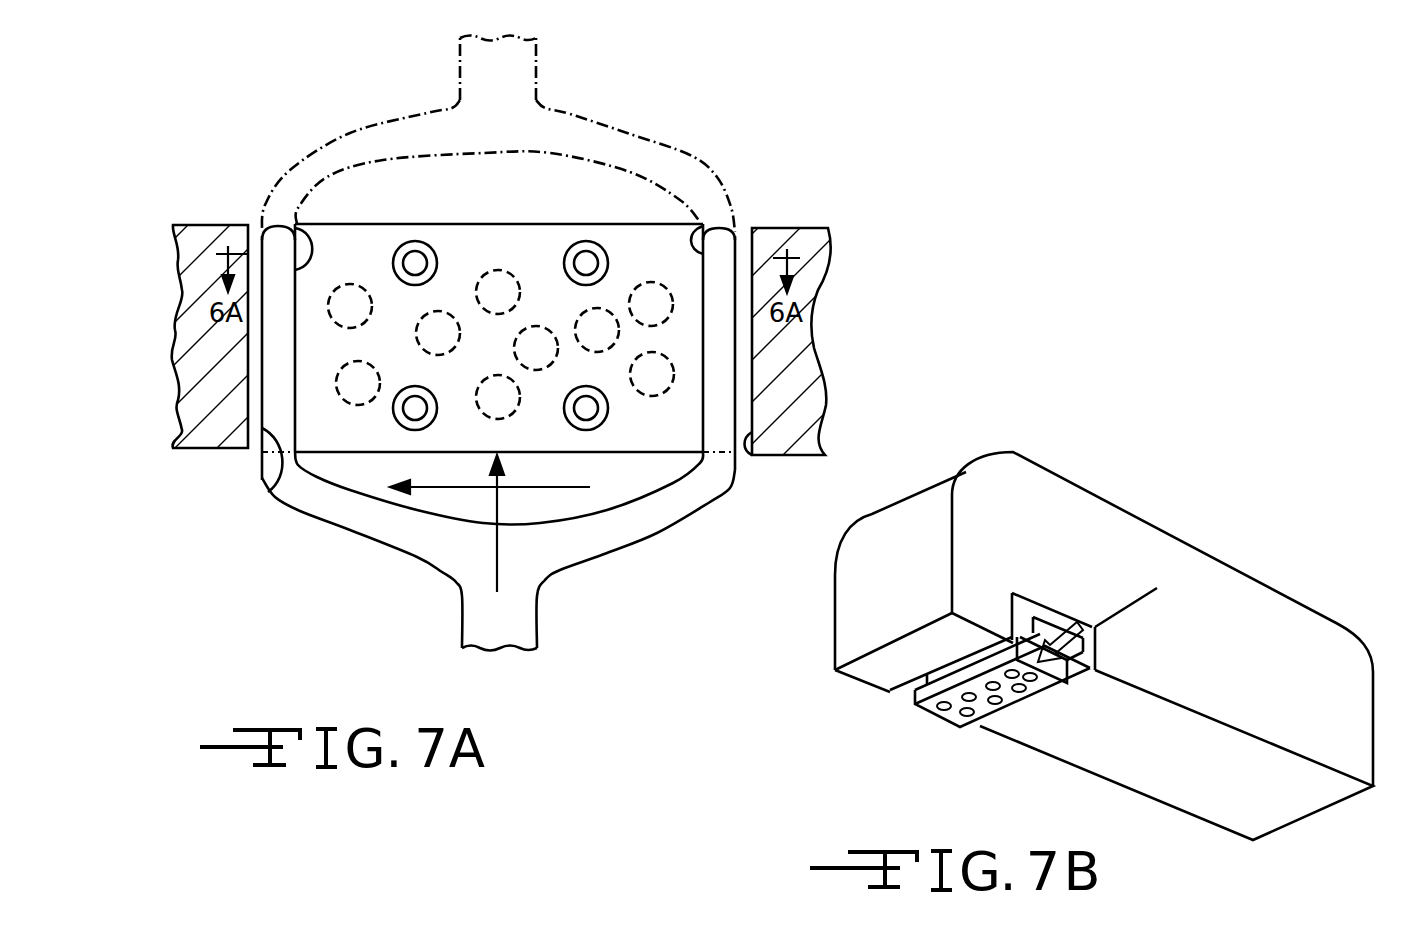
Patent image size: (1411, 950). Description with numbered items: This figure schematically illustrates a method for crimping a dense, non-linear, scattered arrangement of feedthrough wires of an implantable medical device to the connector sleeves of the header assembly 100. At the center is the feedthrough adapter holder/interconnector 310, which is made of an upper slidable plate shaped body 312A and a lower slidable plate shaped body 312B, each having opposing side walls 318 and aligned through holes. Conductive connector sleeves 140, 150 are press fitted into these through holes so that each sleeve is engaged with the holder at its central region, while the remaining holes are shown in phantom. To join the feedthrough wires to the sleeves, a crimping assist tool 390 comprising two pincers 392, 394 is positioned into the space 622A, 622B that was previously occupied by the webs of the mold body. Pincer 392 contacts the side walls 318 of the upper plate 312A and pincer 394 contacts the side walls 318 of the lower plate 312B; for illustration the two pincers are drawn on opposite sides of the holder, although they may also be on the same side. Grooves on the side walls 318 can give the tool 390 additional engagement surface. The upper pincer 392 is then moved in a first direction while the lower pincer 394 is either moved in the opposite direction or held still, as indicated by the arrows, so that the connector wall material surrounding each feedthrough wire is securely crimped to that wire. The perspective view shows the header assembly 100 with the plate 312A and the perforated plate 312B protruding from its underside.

In FIG. 7A, the header assembly 100 is at (172, 248).
In FIG. 7B, the header assembly 100 is at (1253, 570).
In FIG. 7A, the connector sleeve 140 is at (583, 240).
In FIG. 7A, the connector sleeve 150 is at (403, 252).
In FIG. 7A, the feedthrough adapter holder/interconnector 310 is at (460, 222).
In FIG. 7B, the upper slidable plate shaped body 312A is at (1043, 632).
In FIG. 7A, the lower slidable plate shaped body 312B is at (672, 423).
In FIG. 7B, the lower slidable plate shaped body 312B is at (952, 717).
In FIG. 7A, the side walls 318 is at (293, 222).
In FIG. 7A, the crimping assist tool 390 is at (623, 550).
In FIG. 7A, the pincer 392 is at (697, 163).
In FIG. 7A, the pincer 394 is at (690, 524).
In FIG. 7A, the space 622A is at (748, 435).
In FIG. 7A, the space 622B is at (278, 492).